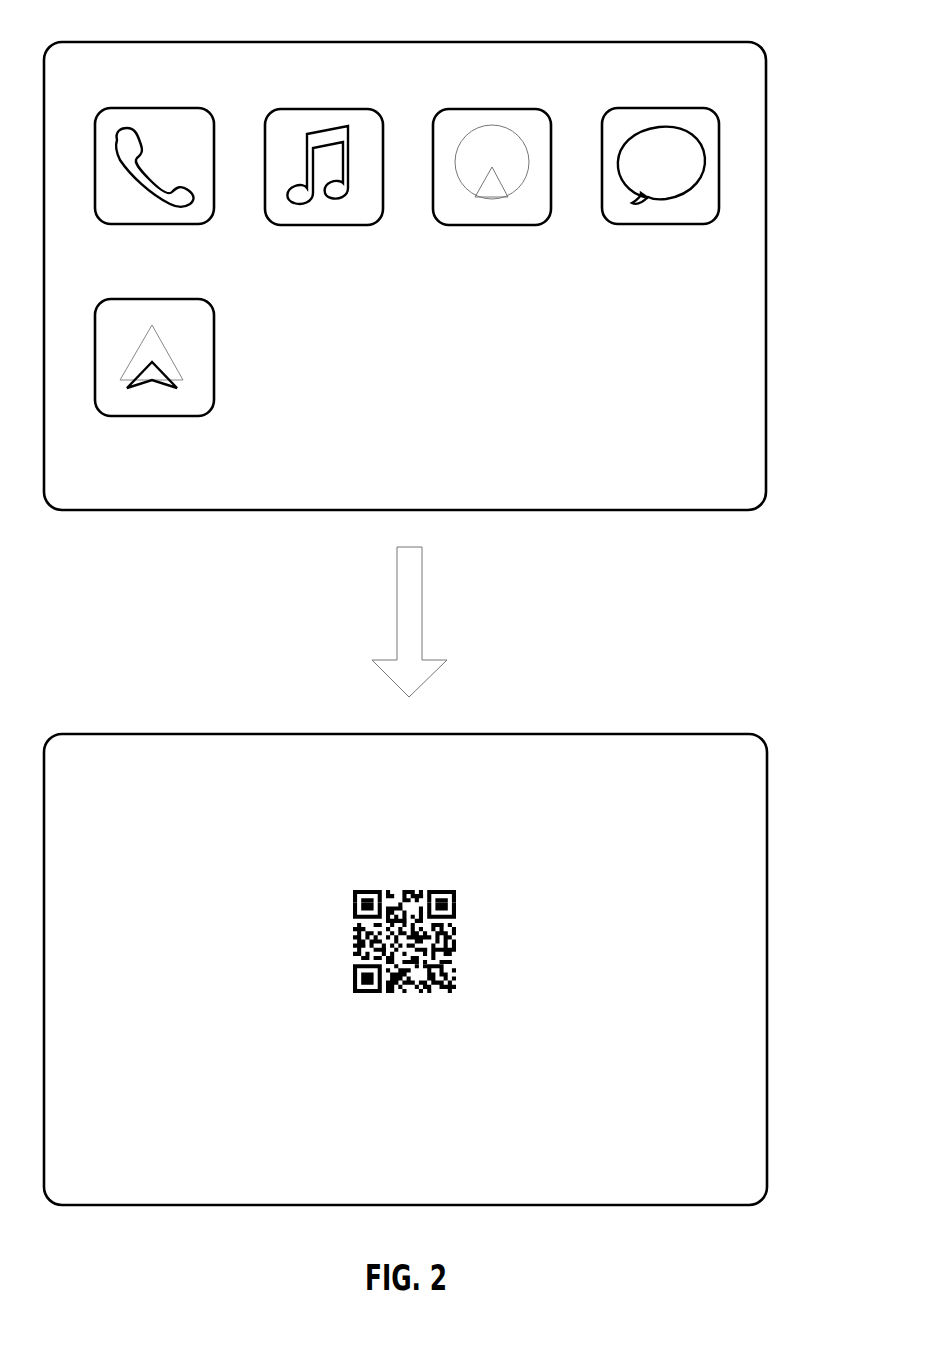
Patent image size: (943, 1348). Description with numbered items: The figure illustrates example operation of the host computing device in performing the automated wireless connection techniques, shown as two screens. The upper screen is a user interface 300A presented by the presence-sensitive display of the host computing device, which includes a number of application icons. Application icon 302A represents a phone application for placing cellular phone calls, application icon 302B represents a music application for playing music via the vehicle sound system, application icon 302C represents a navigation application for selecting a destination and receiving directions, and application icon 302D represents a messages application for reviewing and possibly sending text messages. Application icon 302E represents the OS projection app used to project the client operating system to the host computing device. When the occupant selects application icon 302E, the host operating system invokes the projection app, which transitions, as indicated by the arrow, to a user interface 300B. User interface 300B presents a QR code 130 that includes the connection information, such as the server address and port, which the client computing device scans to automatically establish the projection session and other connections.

The user interface 300A is at (737, 37).
The application icon 302A is at (157, 117).
The application icon 302B is at (327, 117).
The application icon 302C is at (495, 117).
The application icon 302D is at (664, 117).
The application icon 302E is at (157, 308).
The user interface 300B is at (737, 733).
The QR code 130 is at (435, 900).